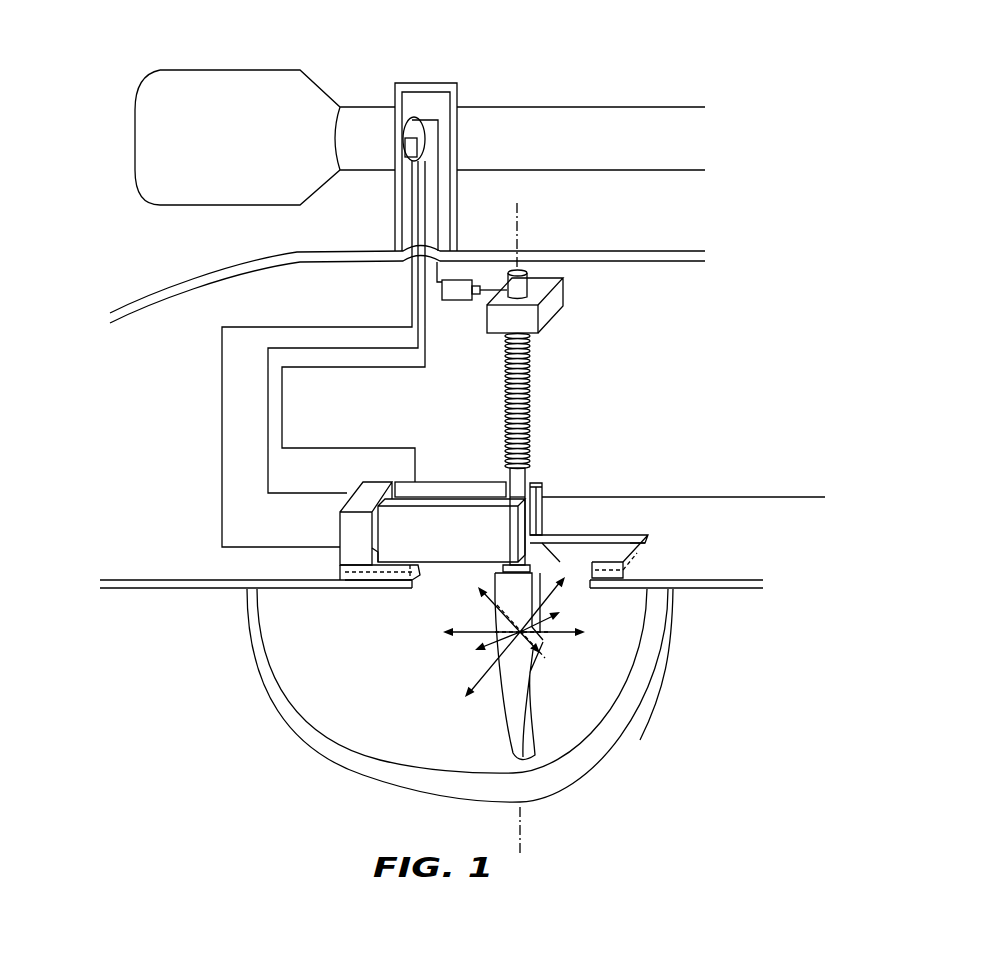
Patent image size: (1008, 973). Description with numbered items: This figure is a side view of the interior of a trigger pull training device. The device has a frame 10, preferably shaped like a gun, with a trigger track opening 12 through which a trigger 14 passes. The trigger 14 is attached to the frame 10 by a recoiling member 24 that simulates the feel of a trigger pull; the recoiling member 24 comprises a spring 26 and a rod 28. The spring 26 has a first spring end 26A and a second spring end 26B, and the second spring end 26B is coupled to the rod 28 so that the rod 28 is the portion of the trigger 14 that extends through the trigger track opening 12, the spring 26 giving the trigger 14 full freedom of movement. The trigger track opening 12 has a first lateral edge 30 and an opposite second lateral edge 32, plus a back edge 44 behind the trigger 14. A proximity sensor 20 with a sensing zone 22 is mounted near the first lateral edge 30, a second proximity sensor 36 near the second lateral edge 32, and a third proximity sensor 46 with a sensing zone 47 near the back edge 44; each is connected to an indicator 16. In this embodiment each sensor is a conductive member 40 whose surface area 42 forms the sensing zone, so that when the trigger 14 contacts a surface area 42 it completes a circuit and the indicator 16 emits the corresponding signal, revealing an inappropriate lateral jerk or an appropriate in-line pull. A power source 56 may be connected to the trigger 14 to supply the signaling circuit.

The frame 10 is at (712, 512).
The trigger track opening 12 is at (602, 538).
The trigger 14 is at (588, 356).
The indicator 16 is at (231, 70).
The proximity sensor 20 is at (540, 482).
The sensing zone 22 is at (542, 552).
The recoiling member 24 is at (493, 367).
The spring 26 is at (530, 398).
The first spring end 26A is at (533, 343).
The second spring end 26B is at (530, 455).
The rod 28 is at (517, 498).
The first lateral edge 30 is at (628, 533).
The second lateral edge 32 is at (618, 563).
The second proximity sensor 36 is at (545, 572).
The conductive member 40 is at (405, 487).
The surface area 42 is at (485, 494).
The back edge 44 is at (353, 590).
The proximity sensor 46 is at (347, 502).
The sensing zone 47 is at (374, 548).
The power source 56 is at (465, 280).